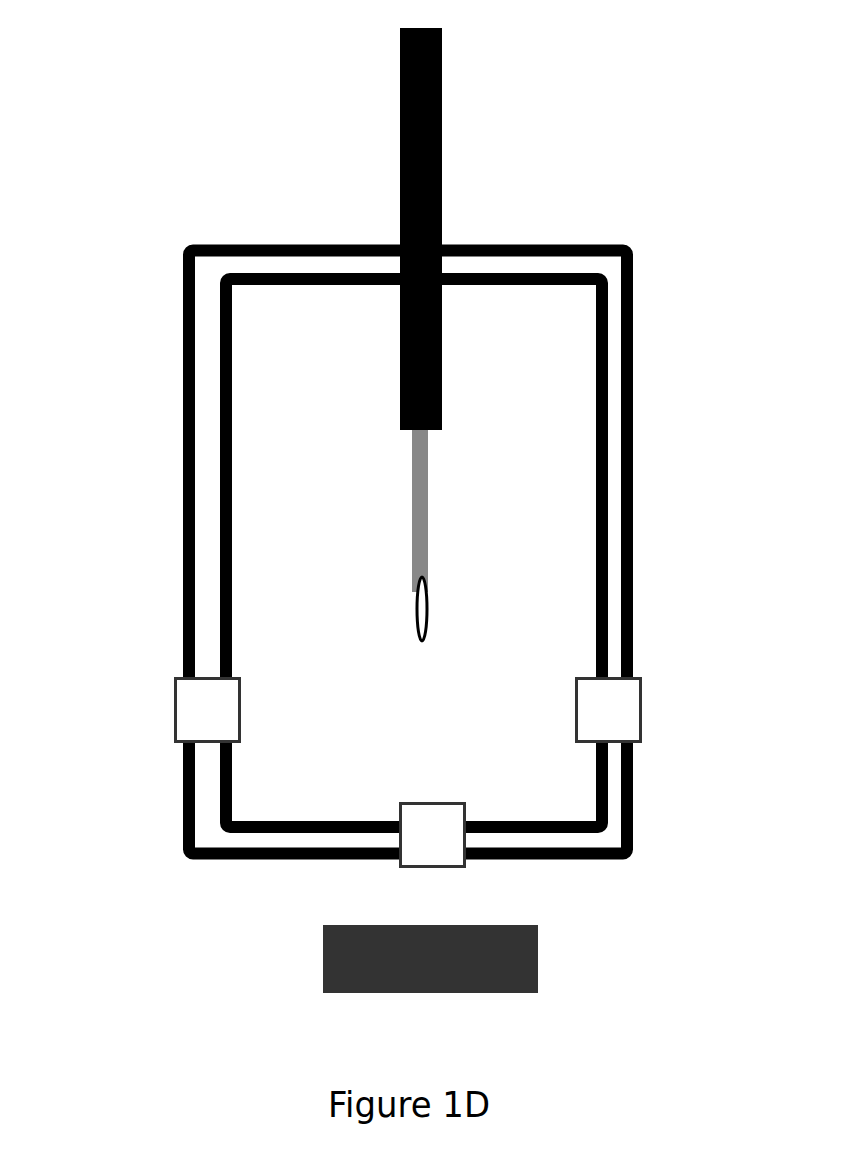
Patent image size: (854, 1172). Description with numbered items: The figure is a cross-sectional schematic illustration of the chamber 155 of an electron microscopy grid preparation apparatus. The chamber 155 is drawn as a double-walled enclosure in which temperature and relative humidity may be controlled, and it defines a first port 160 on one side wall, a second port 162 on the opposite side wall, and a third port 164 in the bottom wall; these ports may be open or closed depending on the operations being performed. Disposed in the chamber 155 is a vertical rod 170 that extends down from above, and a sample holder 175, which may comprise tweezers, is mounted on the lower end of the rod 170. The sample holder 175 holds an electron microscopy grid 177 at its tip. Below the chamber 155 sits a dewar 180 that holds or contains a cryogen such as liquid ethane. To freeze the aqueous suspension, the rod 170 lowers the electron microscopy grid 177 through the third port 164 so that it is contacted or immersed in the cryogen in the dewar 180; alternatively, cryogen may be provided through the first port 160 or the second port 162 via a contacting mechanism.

The chamber 155 is at (633, 246).
The rod 170 is at (442, 100).
The sample holder 175 is at (412, 470).
The electron microscopy grid 177 is at (415, 615).
The second port 162 is at (175, 714).
The first port 160 is at (642, 714).
The third port 164 is at (465, 862).
The dewar 180 is at (530, 962).